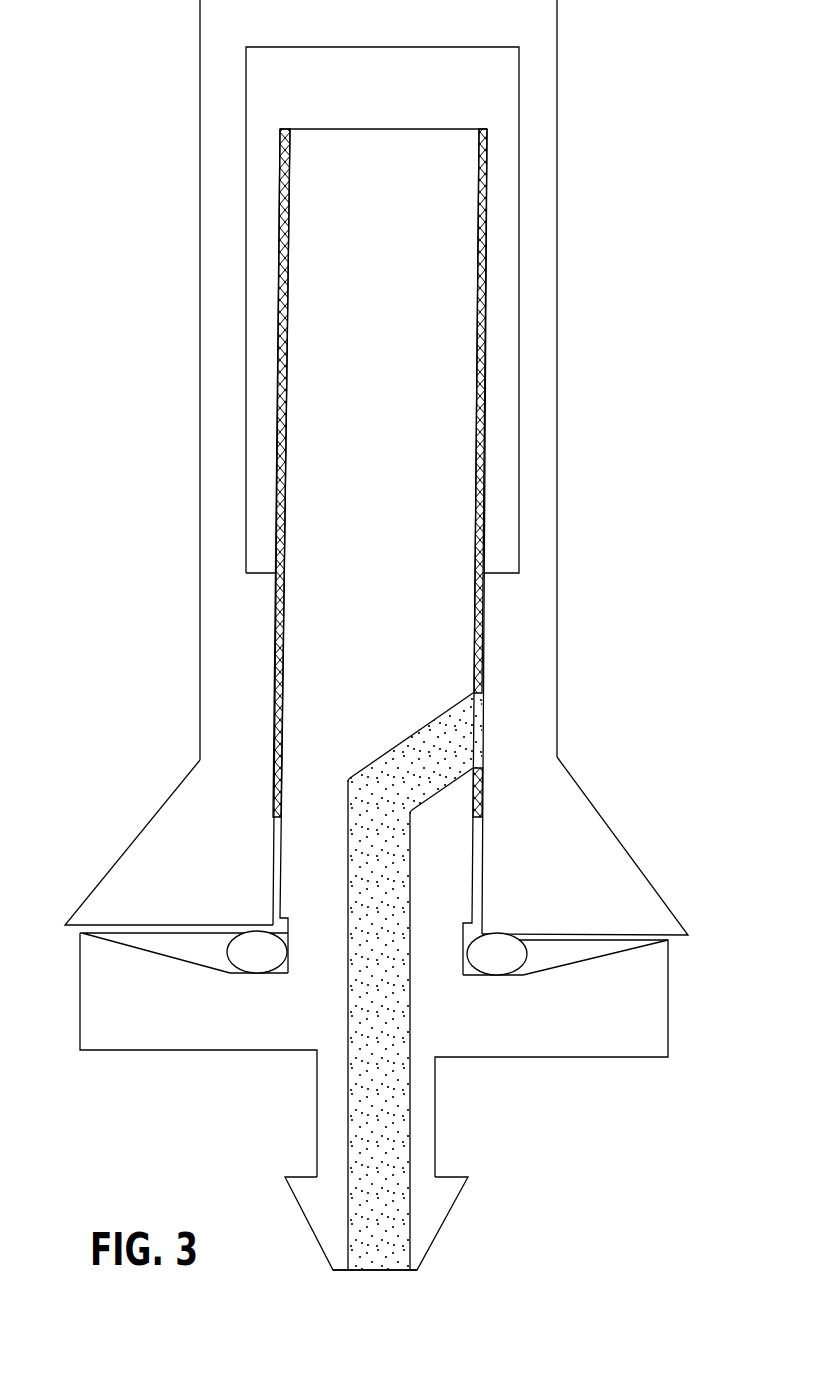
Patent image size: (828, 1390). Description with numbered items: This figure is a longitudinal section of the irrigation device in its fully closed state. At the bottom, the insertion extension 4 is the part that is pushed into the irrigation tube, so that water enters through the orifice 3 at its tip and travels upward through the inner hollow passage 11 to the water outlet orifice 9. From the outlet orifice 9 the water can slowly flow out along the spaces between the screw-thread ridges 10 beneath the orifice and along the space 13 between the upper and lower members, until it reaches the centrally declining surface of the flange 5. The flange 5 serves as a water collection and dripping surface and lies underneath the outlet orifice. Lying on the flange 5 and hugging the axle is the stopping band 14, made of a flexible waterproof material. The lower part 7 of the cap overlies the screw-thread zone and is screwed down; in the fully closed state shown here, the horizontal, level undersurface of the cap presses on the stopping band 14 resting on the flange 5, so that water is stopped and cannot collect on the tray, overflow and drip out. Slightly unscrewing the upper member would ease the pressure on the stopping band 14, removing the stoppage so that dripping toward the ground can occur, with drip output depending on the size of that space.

The orifice 3 is at (378, 1272).
The insertion extension 4 is at (462, 1193).
The flange 5 is at (80, 985).
The lower part of the cap 7 is at (677, 937).
The water outlet orifice 9 is at (476, 723).
The screw-thread ridges 10 is at (482, 768).
The inner hollow passage 11 is at (355, 1042).
The space 13 is at (478, 860).
The stopping band 14 is at (495, 958).